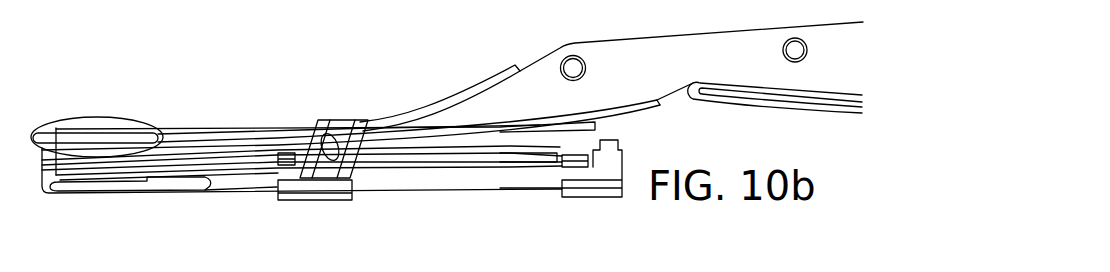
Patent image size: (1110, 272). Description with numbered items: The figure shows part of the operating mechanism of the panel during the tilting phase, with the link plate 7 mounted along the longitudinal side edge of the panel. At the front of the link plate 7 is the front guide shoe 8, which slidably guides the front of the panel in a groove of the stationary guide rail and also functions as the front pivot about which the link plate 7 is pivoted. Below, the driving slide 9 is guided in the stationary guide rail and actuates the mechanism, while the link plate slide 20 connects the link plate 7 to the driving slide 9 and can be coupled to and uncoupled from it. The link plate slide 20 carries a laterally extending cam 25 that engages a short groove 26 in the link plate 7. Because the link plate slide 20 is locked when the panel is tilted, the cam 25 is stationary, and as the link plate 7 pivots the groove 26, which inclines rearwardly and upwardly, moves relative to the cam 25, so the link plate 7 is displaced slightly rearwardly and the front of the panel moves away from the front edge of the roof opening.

The link plate 7 is at (547, 103).
The front guide shoe 8 is at (100, 123).
The driving slide 9 is at (445, 178).
The link plate slide 20 is at (234, 186).
The cam 25 is at (330, 140).
The groove 26 is at (323, 140).